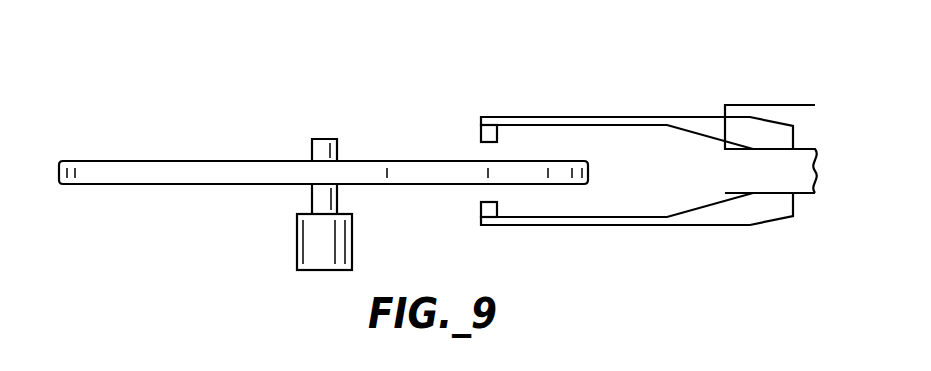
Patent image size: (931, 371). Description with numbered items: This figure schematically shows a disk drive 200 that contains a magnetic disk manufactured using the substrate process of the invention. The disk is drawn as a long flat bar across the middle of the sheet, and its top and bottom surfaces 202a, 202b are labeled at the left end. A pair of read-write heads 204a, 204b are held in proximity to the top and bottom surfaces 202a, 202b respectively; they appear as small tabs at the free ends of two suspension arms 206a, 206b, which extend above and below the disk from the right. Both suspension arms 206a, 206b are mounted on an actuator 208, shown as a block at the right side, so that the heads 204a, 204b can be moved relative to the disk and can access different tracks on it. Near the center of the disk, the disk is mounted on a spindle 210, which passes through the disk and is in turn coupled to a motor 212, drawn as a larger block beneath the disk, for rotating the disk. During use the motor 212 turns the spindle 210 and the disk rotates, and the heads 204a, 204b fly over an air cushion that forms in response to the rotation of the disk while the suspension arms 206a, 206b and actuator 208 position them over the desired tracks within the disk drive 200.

The disk drive 200 is at (133, 83).
The top surface 202a is at (85, 160).
The bottom surface 202b is at (77, 186).
The read-write head 204a is at (481, 134).
The read-write head 204b is at (481, 210).
The suspension arm 206a is at (553, 117).
The suspension arm 206b is at (547, 225).
The actuator 208 is at (782, 175).
The spindle 210 is at (323, 138).
The motor 212 is at (297, 242).